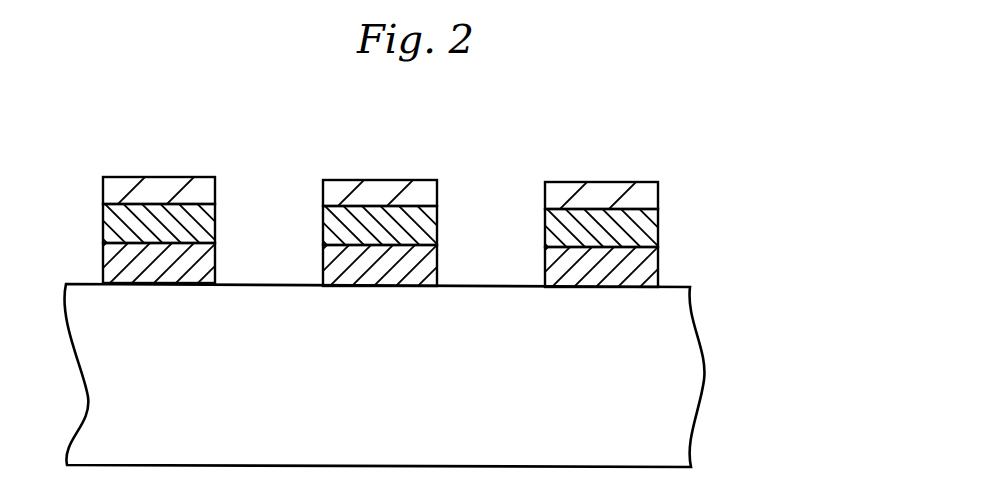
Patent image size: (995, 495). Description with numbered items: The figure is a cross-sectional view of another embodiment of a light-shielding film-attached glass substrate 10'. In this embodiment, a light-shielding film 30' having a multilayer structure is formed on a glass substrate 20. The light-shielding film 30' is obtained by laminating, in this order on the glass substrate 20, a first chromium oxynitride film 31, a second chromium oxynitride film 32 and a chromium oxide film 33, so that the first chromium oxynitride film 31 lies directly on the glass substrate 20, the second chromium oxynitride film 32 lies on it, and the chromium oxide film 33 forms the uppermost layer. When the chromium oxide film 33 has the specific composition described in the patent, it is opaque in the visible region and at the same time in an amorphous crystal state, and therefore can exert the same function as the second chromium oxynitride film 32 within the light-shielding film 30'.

The light-shielding film-attached glass substrate 10' is at (415, 281).
The glass substrate 20 is at (665, 378).
The light-shielding film 30' is at (373, 231).
The first chromium oxynitride film 31 is at (218, 263).
The second chromium oxynitride film 32 is at (218, 227).
The chromium oxide film 33 is at (218, 188).